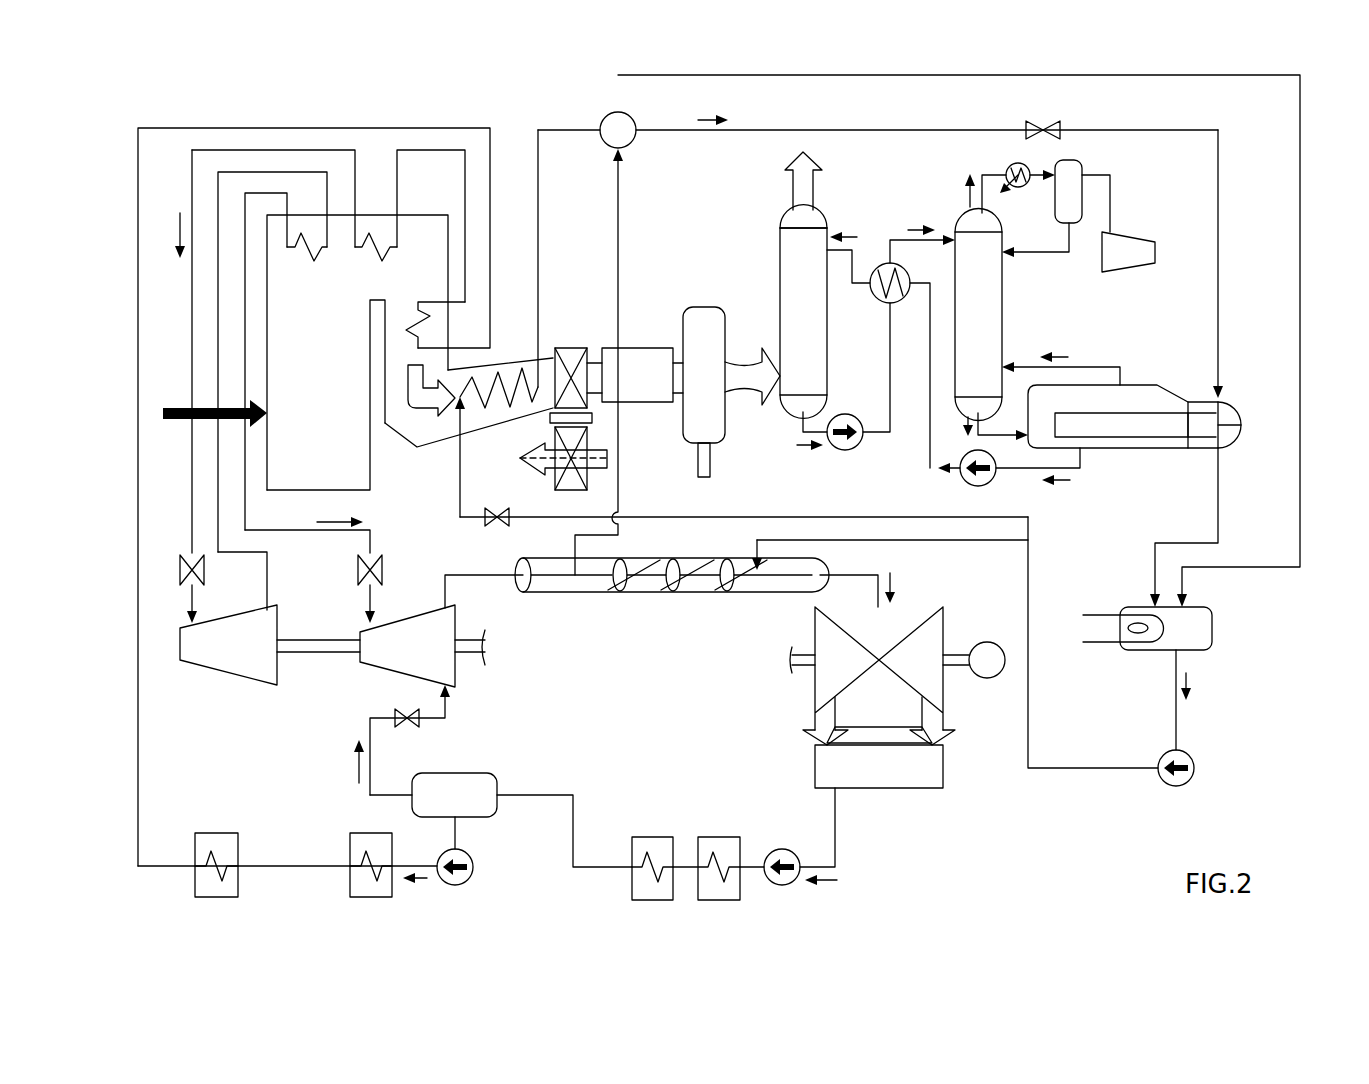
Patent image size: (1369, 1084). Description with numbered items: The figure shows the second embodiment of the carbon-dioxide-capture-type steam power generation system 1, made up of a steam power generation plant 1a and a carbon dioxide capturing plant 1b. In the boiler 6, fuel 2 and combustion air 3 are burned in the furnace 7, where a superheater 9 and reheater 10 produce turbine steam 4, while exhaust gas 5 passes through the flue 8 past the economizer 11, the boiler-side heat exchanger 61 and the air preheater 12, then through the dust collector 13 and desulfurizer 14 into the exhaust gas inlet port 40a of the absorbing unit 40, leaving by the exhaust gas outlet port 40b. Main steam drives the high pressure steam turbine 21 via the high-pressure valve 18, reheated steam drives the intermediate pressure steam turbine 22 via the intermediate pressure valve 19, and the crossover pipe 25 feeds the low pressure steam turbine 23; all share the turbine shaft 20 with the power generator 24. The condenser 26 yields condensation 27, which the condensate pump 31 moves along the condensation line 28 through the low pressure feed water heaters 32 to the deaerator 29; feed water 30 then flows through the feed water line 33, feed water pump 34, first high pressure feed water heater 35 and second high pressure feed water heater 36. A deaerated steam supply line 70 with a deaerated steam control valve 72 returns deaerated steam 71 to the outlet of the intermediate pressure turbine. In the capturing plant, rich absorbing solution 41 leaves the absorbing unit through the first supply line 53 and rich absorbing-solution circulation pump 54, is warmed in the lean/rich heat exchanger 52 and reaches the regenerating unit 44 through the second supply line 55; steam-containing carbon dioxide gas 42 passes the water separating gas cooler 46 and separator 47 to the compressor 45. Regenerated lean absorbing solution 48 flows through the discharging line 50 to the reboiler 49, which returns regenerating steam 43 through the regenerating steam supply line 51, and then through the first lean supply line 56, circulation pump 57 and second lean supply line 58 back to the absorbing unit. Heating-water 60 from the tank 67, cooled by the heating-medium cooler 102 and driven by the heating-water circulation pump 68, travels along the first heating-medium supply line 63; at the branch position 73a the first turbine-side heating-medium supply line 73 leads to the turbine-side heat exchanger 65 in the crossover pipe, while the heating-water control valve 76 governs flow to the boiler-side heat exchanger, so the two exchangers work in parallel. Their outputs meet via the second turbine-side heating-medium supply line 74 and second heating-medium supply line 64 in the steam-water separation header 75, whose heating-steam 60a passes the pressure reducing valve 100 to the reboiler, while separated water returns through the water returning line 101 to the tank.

The carbon-dioxide-capture-type steam power generation system 1 is at (707, 470).
The steam power generation plant 1a is at (128, 179).
The carbon dioxide capturing plant 1b is at (1306, 186).
The fuel 2 is at (178, 407).
The combustion air 3 is at (537, 448).
The turbine steam 4 is at (178, 212).
The exhaust gas 5 is at (441, 413).
The boiler 6 is at (304, 314).
The furnace 7 is at (330, 452).
The flue 8 is at (403, 418).
The superheater 9 is at (361, 259).
The reheater 10 is at (303, 259).
The economizer 11 is at (412, 323).
The air preheater 12 is at (568, 348).
The dust collector 13 is at (631, 348).
The desulfurizer 14 is at (700, 315).
The high-pressure valve 18 is at (185, 551).
The intermediate pressure valve 19 is at (358, 571).
The turbine shaft 20 is at (320, 640).
The high pressure steam turbine 21 is at (236, 672).
The intermediate pressure steam turbine 22 is at (440, 628).
The low pressure steam turbine 23 is at (822, 680).
The power generator 24 is at (986, 680).
The crossover pipe 25 is at (716, 592).
The condenser 26 is at (916, 790).
The condensation 27 is at (829, 882).
The condensation line 28 is at (598, 866).
The deaerator 29 is at (470, 775).
The feed water 30 is at (421, 882).
The condensate pump 31 is at (782, 850).
The low pressure feed water heaters 32 is at (716, 837).
The feed water line 33 is at (138, 806).
The feed water pump 34 is at (475, 873).
The first high pressure feed water heater 35 is at (350, 882).
The second high pressure feed water heater 36 is at (216, 833).
The absorbing unit 40 is at (790, 265).
The exhaust gas inlet port 40a is at (784, 454).
The exhaust gas outlet port 40b is at (786, 217).
The carbon-dioxide-containing rich absorbing solution 41 is at (921, 228).
The steam-containing carbon dioxide gas 42 is at (970, 192).
The regenerating steam 43 is at (1050, 357).
The regenerating unit 44 is at (1005, 290).
The compressor 45 is at (1142, 235).
The water separating gas cooler 46 is at (1023, 200).
The separator 47 is at (1070, 163).
The regenerated lean absorbing solution 48 is at (839, 235).
The reboiler 49 is at (1130, 438).
The regenerated lean absorbing solution discharging line 50 is at (1003, 440).
The regenerating steam supply line 51 is at (1120, 375).
The lean/rich heat exchanger 52 is at (886, 263).
The first carbon-dioxide-containing rich absorbing solution supply line 53 is at (890, 398).
The rich absorbing-solution circulation pump 54 is at (850, 450).
The second carbon-dioxide-containing rich absorbing solution supply line 55 is at (900, 240).
The first regenerated lean absorbing solution supply line 56 is at (930, 395).
The regenerated lean absorbing solution circulation pump 57 is at (962, 480).
The second regenerated lean absorbing solution supply line 58 is at (854, 285).
The heating-water 60 is at (1195, 688).
The heating-steam 60a is at (753, 104).
The boiler-side heat exchanger 61 is at (512, 368).
The first heating-medium supply line 63 is at (1029, 770).
The second heating-medium supply line 64 is at (895, 130).
The turbine-side heat exchanger 65 is at (651, 592).
The tank 67 is at (1213, 626).
The heating-water circulation pump 68 is at (1166, 782).
The deaerated steam supply line 70 is at (385, 796).
The deaerated steam 71 is at (352, 770).
The deaerated steam control valve 72 is at (395, 716).
The first turbine-side heating-medium supply line 73 is at (960, 542).
The branch position 73a is at (1040, 542).
The second turbine-side heating-medium supply line 74 is at (600, 455).
The steam-water separation header 75 is at (601, 119).
The heating-water control valve 76 is at (490, 524).
The pressure reducing valve 100 is at (1046, 121).
The water returning line 101 is at (1300, 112).
The heating-medium cooler 102 is at (1098, 645).